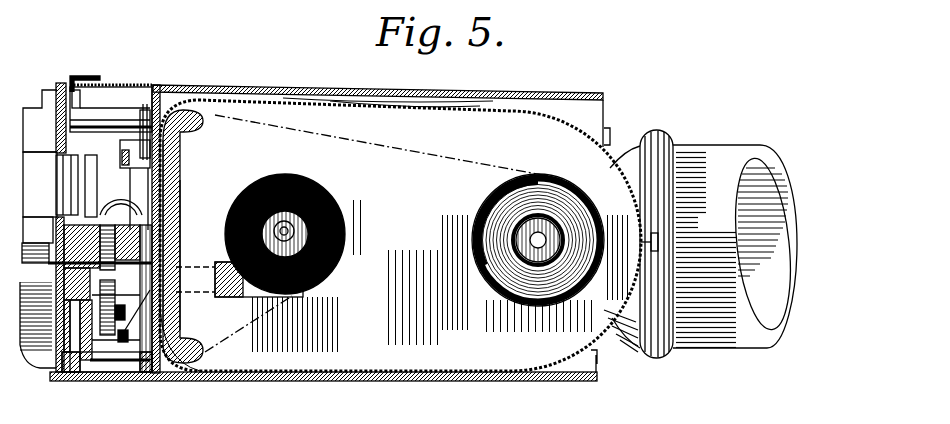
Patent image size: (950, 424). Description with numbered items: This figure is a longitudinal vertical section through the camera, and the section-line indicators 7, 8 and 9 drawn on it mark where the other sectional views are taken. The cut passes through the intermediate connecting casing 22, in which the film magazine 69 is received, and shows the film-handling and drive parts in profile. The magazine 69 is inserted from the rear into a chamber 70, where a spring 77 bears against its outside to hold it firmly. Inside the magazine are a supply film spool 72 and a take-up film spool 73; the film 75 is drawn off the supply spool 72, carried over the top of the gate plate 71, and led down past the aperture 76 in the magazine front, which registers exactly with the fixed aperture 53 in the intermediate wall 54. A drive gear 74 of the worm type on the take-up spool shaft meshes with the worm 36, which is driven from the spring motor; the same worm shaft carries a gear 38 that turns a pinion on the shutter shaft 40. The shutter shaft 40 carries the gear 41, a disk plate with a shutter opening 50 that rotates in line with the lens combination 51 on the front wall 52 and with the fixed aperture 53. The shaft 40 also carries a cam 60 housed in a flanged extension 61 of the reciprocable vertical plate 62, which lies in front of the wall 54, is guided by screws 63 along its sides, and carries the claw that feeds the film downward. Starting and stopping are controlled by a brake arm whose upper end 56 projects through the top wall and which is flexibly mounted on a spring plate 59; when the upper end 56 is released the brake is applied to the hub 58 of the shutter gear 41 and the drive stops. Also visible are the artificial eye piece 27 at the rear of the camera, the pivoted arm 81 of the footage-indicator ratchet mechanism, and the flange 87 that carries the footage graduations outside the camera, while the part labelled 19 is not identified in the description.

The flange 87 is at (48, 105).
The upper end of brake arm 56 is at (96, 78).
The reciprocable vertically disposed plate 62 is at (130, 125).
The intermediate wall 54 is at (160, 88).
The pivoted arm 81 is at (186, 106).
The spring plate 59 is at (78, 124).
The lens combination 51 is at (50, 172).
The screws 63 is at (121, 154).
The shutter opening 50 is at (90, 185).
The gear 38 is at (97, 208).
The flanged extension 61 is at (128, 216).
The fixed aperture 53 is at (181, 180).
The aperture 76 is at (181, 196).
The gate plate 71 is at (181, 228).
The shaft 40 is at (176, 264).
The cam 60 is at (166, 322).
The gear 19 is at (100, 298).
The worm 36 is at (235, 300).
The hub 58 is at (42, 362).
The front wall 52 is at (58, 374).
The gear 41 is at (78, 374).
The film 75 is at (282, 184).
The take-up film spool 73 is at (340, 212).
The drive gear 74 is at (336, 272).
The spring 77 is at (352, 96).
The connecting casing 22 is at (460, 92).
The chamber 70 is at (550, 97).
The supply film spool 72 is at (492, 214).
The artificial eye piece 27 is at (708, 148).
The magazine 69 is at (605, 345).
The section line 8 is at (66, 30).
The section line 7 is at (105, 30).
The section line 9 is at (291, 71).